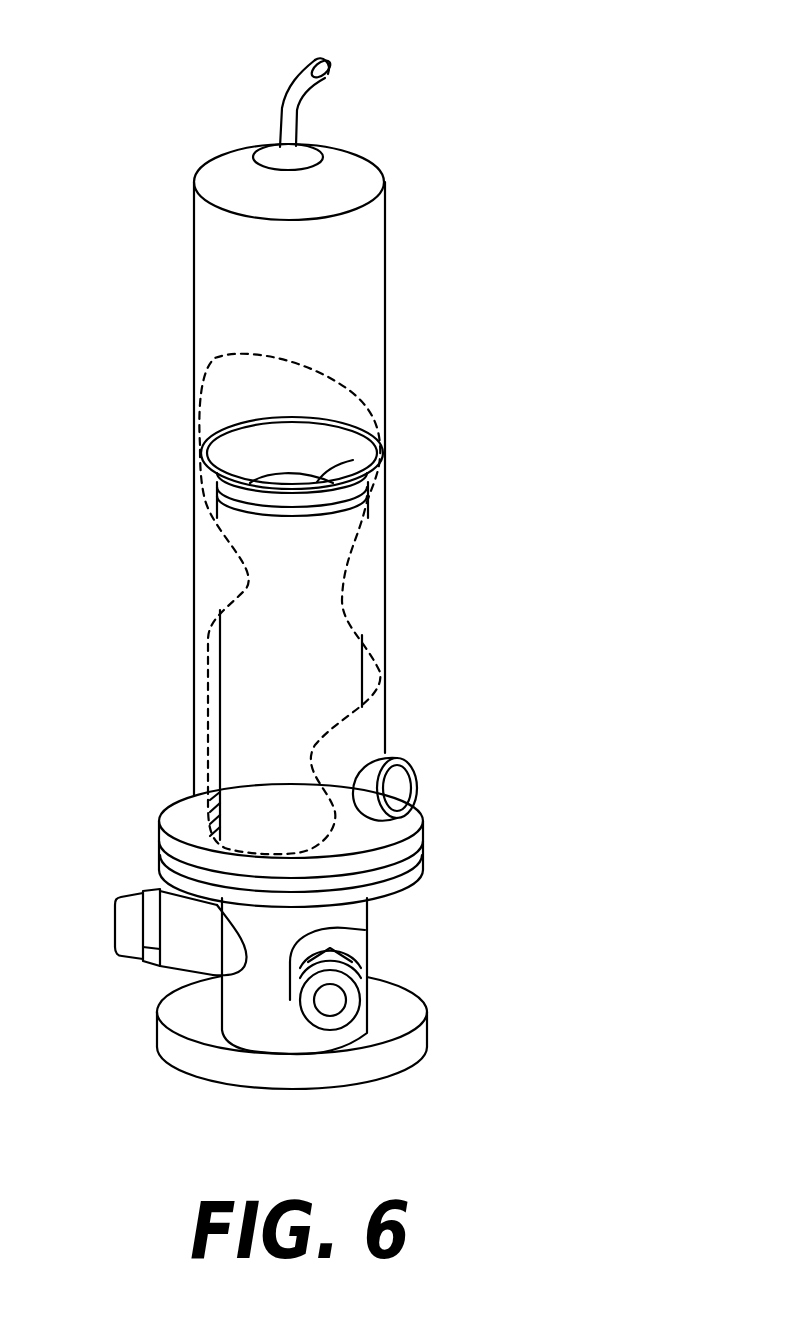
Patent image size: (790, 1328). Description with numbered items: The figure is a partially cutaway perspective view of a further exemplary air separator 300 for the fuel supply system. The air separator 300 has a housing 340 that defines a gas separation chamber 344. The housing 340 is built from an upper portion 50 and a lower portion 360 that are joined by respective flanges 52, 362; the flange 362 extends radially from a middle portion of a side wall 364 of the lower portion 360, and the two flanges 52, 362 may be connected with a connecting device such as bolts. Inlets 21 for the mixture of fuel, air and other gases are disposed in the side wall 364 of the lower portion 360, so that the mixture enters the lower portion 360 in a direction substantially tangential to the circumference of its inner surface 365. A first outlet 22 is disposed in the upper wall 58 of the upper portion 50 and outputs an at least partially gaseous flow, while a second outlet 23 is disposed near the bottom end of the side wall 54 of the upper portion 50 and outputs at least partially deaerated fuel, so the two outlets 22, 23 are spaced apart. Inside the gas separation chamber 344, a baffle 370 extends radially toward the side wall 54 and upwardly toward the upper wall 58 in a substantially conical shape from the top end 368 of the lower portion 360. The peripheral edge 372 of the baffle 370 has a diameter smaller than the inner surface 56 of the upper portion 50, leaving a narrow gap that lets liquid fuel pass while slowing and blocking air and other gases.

The air separator 300 is at (378, 84).
The housing upper portion 50 is at (197, 163).
The side wall 54 is at (368, 275).
The upper wall 58 is at (365, 172).
The first outlet 22 is at (300, 70).
The housing 340 is at (432, 452).
The gas separation chamber 344 is at (353, 410).
The peripheral edge 372 is at (260, 418).
The baffle 370 is at (237, 465).
The inner surface 365 is at (383, 462).
The top end 368 is at (215, 498).
The inner surface 56 is at (372, 663).
The housing lower portion 360 is at (233, 660).
The second outlet 23 is at (397, 752).
The flange 52 is at (422, 805).
The flange 362 is at (425, 845).
The inlet 21 is at (120, 928).
The side wall 364 is at (237, 1000).